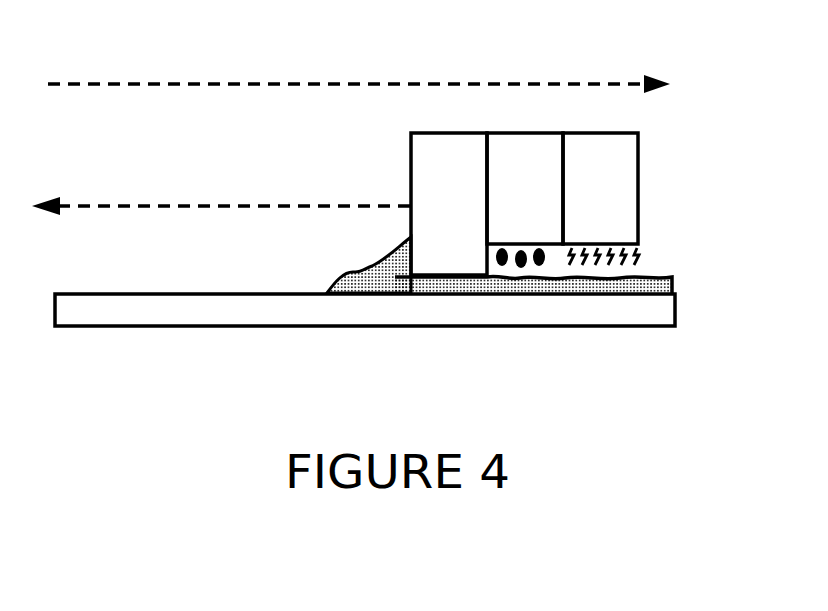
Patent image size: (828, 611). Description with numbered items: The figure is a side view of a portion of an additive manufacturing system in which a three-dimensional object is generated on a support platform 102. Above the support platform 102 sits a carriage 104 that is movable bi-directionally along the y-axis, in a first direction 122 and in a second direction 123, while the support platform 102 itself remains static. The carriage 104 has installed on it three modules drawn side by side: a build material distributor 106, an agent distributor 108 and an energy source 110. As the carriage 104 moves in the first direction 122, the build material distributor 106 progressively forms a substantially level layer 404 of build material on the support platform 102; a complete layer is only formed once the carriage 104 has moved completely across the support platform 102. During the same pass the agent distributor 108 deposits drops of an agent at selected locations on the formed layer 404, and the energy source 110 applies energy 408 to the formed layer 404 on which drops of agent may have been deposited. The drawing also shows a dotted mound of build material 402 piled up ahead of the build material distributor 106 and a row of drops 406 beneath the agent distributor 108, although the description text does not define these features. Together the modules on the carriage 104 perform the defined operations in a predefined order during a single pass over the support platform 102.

The support platform 102 is at (267, 323).
The carriage 104 is at (564, 179).
The build material distributor 106 is at (449, 204).
The agent distributor 108 is at (525, 188).
The energy source 110 is at (600, 188).
The first direction 122 is at (150, 205).
The second direction 123 is at (190, 86).
The fillet of adhesive material 402 is at (357, 278).
The layer of build material 404 is at (476, 288).
The solder bumps 406 is at (532, 268).
The energy 408 is at (642, 259).